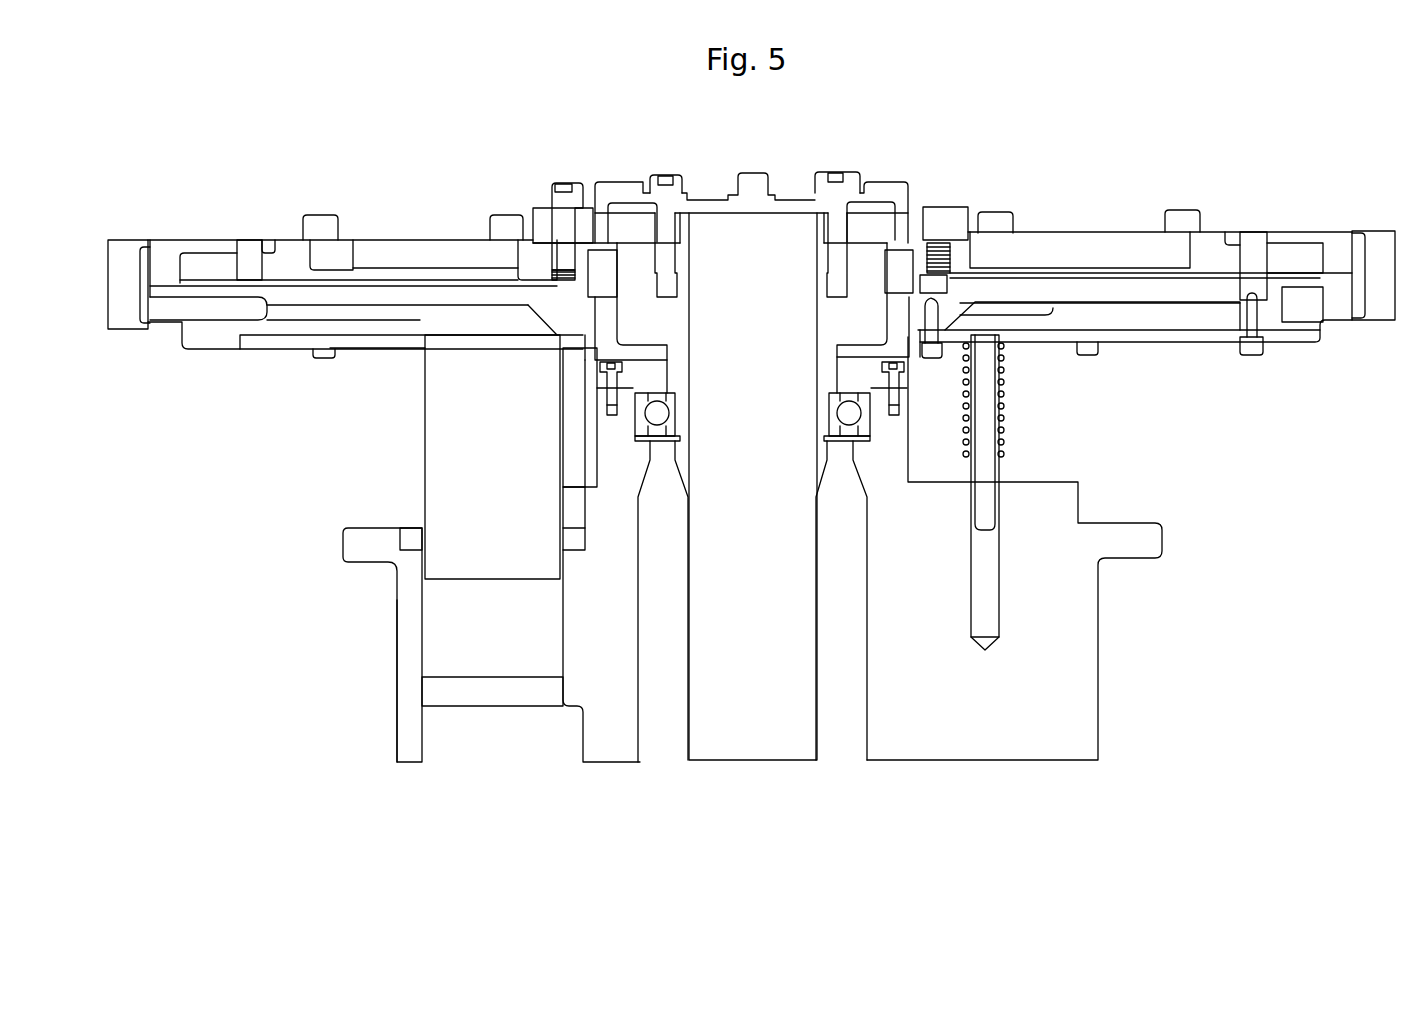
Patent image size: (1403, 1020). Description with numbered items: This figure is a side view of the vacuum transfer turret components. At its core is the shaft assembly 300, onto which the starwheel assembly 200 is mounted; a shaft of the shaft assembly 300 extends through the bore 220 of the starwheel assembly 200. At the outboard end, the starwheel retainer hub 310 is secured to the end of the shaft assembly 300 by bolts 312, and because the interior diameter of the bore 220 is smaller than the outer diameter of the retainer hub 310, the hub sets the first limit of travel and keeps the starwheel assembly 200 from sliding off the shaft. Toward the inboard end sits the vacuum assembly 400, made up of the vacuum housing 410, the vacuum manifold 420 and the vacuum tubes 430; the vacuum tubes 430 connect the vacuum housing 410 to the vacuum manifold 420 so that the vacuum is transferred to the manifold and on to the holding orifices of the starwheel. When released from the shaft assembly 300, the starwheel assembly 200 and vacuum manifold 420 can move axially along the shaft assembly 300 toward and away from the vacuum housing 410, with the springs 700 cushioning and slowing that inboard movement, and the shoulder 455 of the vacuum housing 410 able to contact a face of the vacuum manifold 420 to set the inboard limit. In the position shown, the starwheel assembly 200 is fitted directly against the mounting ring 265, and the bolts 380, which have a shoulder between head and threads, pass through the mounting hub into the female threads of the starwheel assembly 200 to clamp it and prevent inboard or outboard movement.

The starwheel assembly 200 is at (1347, 352).
The bore 220 is at (617, 265).
The mounting ring 265 is at (960, 208).
The shaft assembly 300 is at (790, 772).
The starwheel retainer hub 310 is at (873, 215).
The bolts 312 is at (835, 178).
The bolts 380 is at (561, 183).
The vacuum assembly 400 is at (384, 612).
The vacuum housing 410 is at (397, 705).
The vacuum manifold 420 is at (1195, 340).
The vacuum tubes 430 is at (424, 433).
The shoulder 455 is at (1075, 480).
The springs 700 is at (1000, 405).